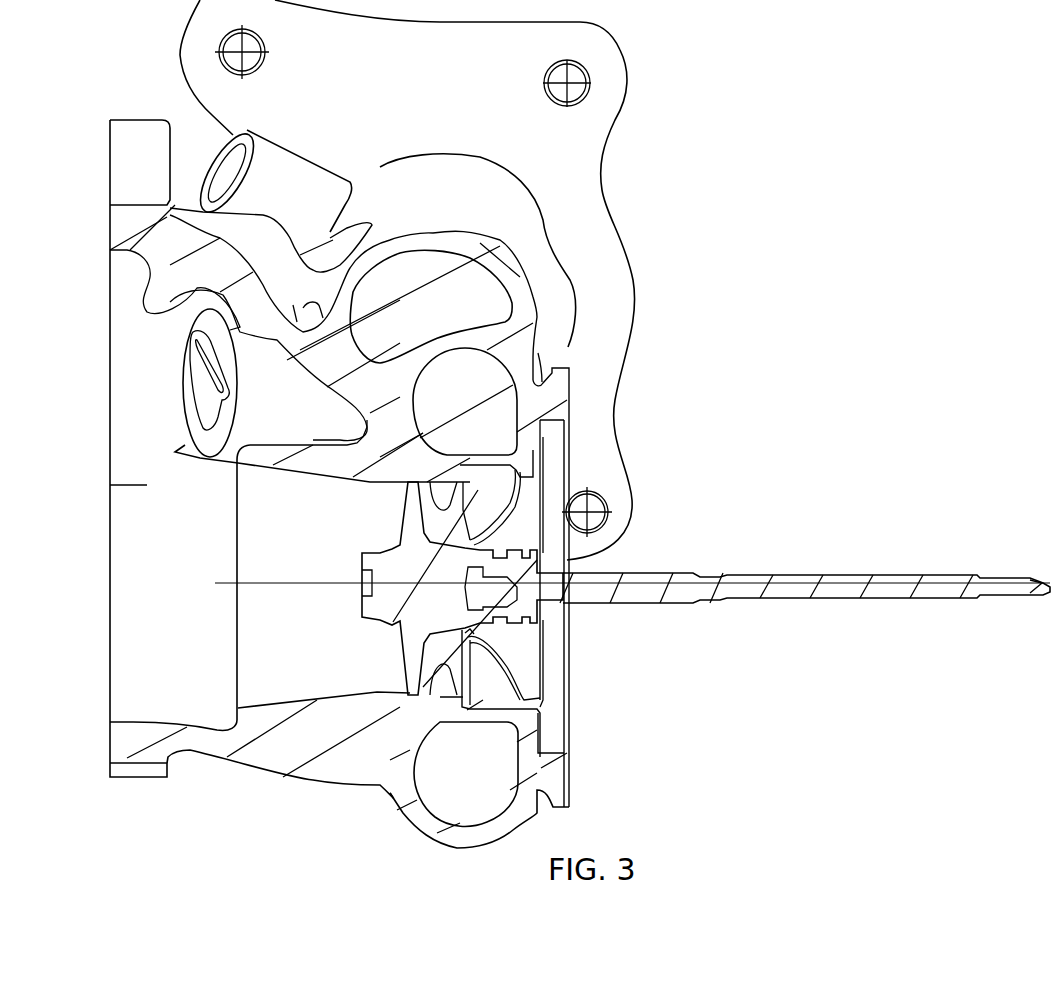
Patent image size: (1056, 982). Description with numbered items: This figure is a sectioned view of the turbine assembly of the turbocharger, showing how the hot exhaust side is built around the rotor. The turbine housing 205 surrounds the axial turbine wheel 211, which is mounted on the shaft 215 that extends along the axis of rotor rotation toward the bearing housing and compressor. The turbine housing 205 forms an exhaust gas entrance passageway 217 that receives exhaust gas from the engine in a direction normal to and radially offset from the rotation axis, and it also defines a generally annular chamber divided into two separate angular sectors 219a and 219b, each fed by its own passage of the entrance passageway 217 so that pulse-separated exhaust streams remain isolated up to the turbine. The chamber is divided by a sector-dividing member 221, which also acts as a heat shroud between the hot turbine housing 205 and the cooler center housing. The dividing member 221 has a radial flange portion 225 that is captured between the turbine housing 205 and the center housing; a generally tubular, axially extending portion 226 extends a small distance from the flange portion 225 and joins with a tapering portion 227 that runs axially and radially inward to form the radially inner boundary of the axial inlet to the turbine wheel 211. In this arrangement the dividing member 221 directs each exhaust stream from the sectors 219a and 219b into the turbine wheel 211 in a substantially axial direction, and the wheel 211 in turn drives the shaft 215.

The turbine housing 205 is at (353, 757).
The axial turbine wheel 211 is at (430, 622).
The shaft 215 is at (847, 583).
The exhaust gas entrance passageway 217 is at (443, 180).
The angular sector 219a is at (408, 280).
The angular sector 219b is at (467, 400).
The sector-dividing member 221 is at (513, 515).
The radial flange portion 225 is at (548, 735).
The tubular axially extending portion 226 is at (527, 703).
The tapering portion 227 is at (501, 658).